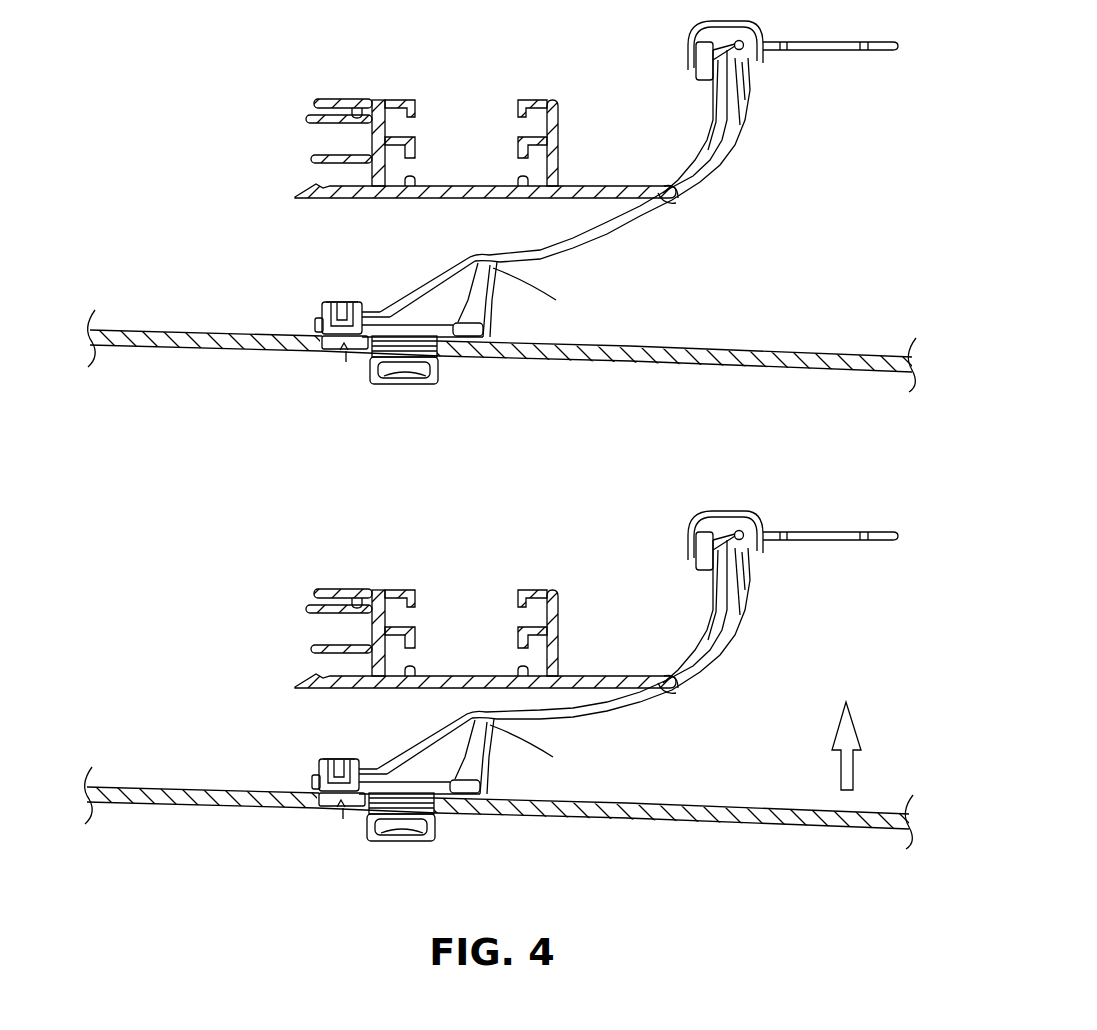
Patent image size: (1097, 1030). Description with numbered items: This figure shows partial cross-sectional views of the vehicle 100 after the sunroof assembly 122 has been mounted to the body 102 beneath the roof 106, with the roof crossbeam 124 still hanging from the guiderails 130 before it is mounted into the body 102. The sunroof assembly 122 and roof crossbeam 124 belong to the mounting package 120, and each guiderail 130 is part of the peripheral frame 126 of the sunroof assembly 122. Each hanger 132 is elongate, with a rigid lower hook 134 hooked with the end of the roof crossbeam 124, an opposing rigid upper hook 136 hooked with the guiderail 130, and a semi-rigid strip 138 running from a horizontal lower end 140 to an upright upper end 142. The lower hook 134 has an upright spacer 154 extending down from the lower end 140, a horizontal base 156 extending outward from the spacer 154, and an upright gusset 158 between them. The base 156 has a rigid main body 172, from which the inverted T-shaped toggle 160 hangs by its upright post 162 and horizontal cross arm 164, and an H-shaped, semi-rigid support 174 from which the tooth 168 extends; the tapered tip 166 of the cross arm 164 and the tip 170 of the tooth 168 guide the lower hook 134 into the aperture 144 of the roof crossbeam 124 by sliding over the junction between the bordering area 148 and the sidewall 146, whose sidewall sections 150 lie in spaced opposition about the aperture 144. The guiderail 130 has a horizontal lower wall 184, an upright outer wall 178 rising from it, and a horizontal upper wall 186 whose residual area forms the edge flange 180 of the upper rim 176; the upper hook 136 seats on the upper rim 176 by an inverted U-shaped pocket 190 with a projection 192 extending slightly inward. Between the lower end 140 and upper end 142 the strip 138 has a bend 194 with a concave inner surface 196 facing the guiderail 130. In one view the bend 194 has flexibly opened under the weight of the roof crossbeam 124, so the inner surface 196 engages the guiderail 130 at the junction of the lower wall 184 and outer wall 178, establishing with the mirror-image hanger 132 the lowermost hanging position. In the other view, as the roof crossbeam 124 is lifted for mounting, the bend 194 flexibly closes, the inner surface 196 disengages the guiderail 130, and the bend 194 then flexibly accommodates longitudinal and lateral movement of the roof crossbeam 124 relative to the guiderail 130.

The vehicle 100 is at (172, 146).
The body 102 is at (172, 173).
The roof 106 is at (172, 201).
The mounting package 120 is at (333, 96).
The sunroof assembly 122 is at (381, 96).
The roof crossbeam 124 is at (157, 330).
The frame 126 is at (542, 97).
The guiderail 130 is at (528, 98).
The hanger 132 is at (735, 155).
The lower hook 134 is at (457, 365).
The upper hook 136 is at (731, 30).
The strip 138 is at (715, 178).
The lower end 140 is at (655, 411).
The upper end 142 is at (753, 93).
The aperture 144 is at (328, 383).
The sidewall 146 is at (327, 365).
The bordering area 148 is at (346, 362).
The sidewall sections 150 is at (323, 350).
The spacer 154 is at (500, 296).
The base 156 is at (483, 332).
The gusset 158 is at (437, 273).
The toggle 160 is at (453, 380).
The post 162 is at (457, 350).
The cross arm 164 is at (440, 385).
The tip 166 is at (395, 386).
The tooth 168 is at (318, 330).
The tip 170 is at (317, 331).
The main body 172 is at (400, 310).
The support 174 is at (330, 295).
The upper rim 176 is at (710, 49).
The outer wall 178 is at (715, 117).
The edge flange 180 is at (716, 46).
The lower wall 184 is at (637, 187).
The upper wall 186 is at (733, 37).
The pocket 190 is at (732, 115).
The projection 192 is at (750, 97).
The bend 194 is at (700, 197).
The inner surface 196 is at (673, 187).